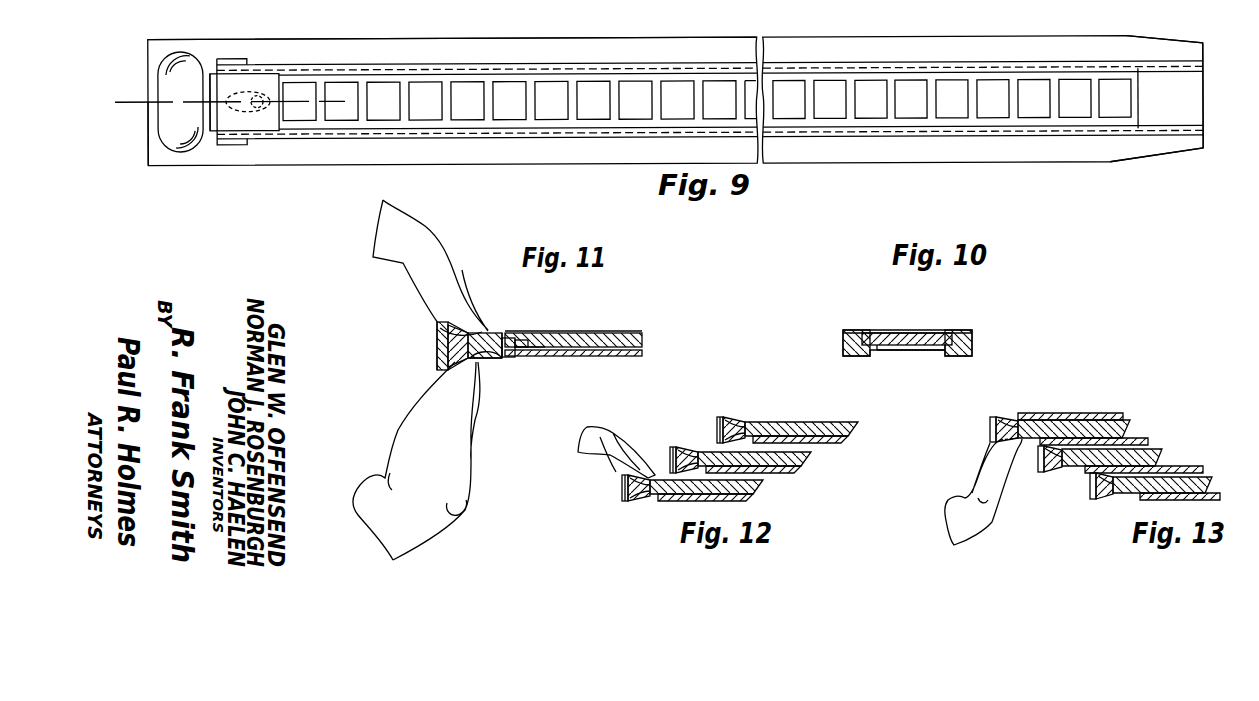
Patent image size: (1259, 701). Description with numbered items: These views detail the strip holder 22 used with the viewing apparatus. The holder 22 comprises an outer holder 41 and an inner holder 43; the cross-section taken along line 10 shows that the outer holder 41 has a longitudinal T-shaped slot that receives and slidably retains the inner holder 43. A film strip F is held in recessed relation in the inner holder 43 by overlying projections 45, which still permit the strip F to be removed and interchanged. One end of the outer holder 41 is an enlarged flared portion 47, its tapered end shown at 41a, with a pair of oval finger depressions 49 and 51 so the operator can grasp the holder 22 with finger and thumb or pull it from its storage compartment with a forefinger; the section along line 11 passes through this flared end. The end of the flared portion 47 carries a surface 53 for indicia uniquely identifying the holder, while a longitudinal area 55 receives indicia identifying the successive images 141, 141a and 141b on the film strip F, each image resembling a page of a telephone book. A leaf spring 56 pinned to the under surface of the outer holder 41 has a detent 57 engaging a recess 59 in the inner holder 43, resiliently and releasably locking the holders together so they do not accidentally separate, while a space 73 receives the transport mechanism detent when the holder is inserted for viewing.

In FIG. 9, the section line 10— 10 is at (490, 180).
In FIG. 9, the section line 11— 11 is at (123, 100).
In FIG. 9, the strip holder 22 is at (585, 54).
In FIG. 9, the outer holder 41 is at (1176, 50).
In FIG. 11, the outer holder 41 is at (600, 333).
In FIG. 10, the outer holder 41 is at (973, 340).
In FIG. 9, the tapered end of outer panel 41a is at (1160, 160).
In FIG. 9, the inner holder 43 is at (1198, 108).
In FIG. 11, the inner holder 43 is at (643, 350).
In FIG. 10, the inner holder 43 is at (937, 333).
In FIG. 9, the overlying projections 45 is at (1170, 72).
In FIG. 10, the overlying projections 45 is at (879, 352).
In FIG. 9, the enlarged flared portion 47 is at (163, 158).
In FIG. 11, the enlarged flared portion 47 is at (436, 327).
In FIG. 12, the enlarged flared portion 47 is at (748, 423).
In FIG. 13, the enlarged flared portion 47 is at (1095, 499).
In FIG. 11, the finger depression 49 is at (474, 331).
In FIG. 12, the finger depression 49 is at (683, 447).
In FIG. 13, the finger depression 49 is at (1000, 418).
In FIG. 9, the finger depression 51 is at (183, 60).
In FIG. 11, the finger depression 51 is at (492, 360).
In FIG. 12, the finger depression 51 is at (633, 498).
In FIG. 13, the finger depression 51 is at (1056, 472).
In FIG. 11, the indicia surface 53 is at (437, 350).
In FIG. 12, the indicia surface 53 is at (671, 450).
In FIG. 13, the indicia surface 53 is at (1042, 466).
In FIG. 10, the longitudinal indicia area 55 is at (903, 333).
In FIG. 9, the leaf spring 56 is at (256, 92).
In FIG. 11, the leaf spring 56 is at (543, 336).
In FIG. 11, the detent 57 is at (522, 339).
In FIG. 11, the recess 59 is at (513, 358).
In FIG. 9, the space 73 is at (215, 131).
In FIG. 11, the space 73 is at (504, 358).
In FIG. 9, the first image 141 is at (1115, 108).
In FIG. 9, the successive image 141a is at (1076, 106).
In FIG. 9, the successive image 141b is at (1037, 110).
In FIG. 10, the film strip F is at (905, 356).